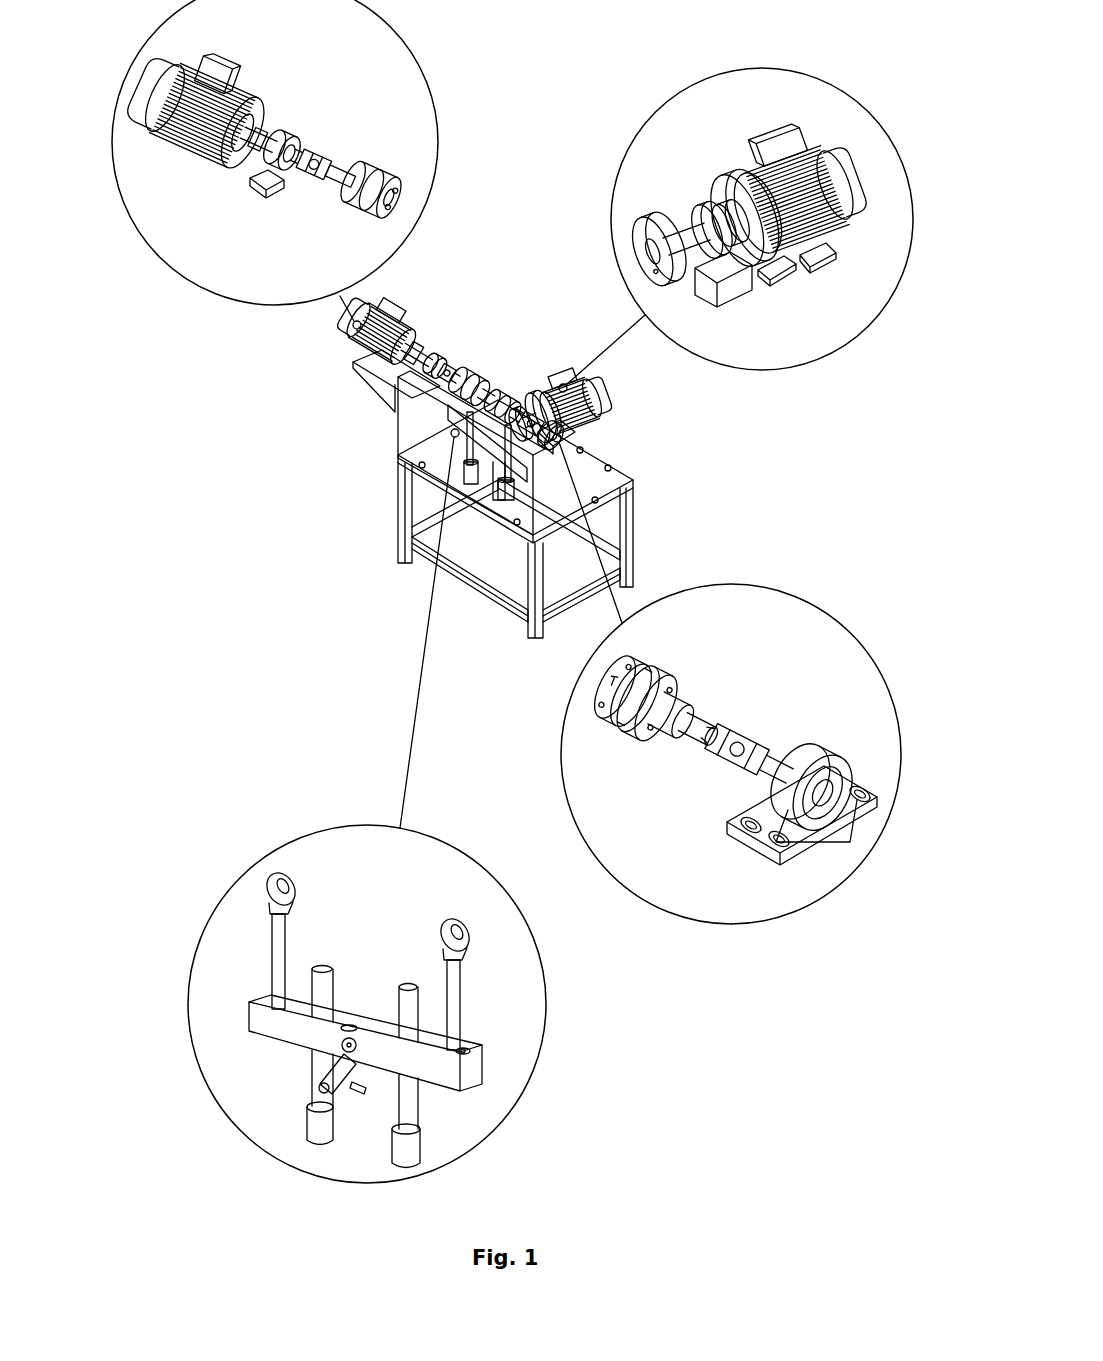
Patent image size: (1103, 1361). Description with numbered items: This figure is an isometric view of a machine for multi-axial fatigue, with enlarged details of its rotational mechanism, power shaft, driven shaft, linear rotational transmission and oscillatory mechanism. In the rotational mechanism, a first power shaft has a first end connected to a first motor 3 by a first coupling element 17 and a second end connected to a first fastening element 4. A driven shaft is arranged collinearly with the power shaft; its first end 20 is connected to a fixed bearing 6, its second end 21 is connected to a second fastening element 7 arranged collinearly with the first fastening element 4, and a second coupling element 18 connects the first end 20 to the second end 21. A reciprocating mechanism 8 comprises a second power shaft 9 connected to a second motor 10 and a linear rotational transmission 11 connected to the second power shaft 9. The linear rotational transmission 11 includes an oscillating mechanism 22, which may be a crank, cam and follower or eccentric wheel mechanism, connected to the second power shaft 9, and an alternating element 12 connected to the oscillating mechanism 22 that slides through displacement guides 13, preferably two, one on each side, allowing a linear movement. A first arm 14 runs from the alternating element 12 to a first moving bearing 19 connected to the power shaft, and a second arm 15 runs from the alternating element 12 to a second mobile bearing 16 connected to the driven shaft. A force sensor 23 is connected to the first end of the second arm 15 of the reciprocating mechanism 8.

The first motor 3 is at (157, 107).
The first fastening element 4 is at (380, 187).
The fixed bearing 6 is at (767, 785).
The second fastening element 7 is at (642, 670).
The reciprocating mechanism 8 is at (301, 837).
The second power shaft 9 is at (698, 233).
The second motor 10 is at (807, 142).
The linear rotational transmission 11 is at (234, 994).
The alternating element 12 is at (259, 1009).
The displacement guide 13 is at (409, 1113).
The first arm 14 is at (279, 991).
The second arm 15 is at (457, 1019).
The second mobile bearing 16 is at (468, 931).
The first coupling element 17 is at (313, 157).
The second coupling element 18 is at (737, 725).
The first moving bearing 19 is at (275, 874).
The first end of the driven shaft 20 is at (350, 192).
The second end of the driven shaft 21 is at (660, 720).
The oscillating mechanism 22 is at (329, 1087).
The force sensor 23 is at (464, 1054).